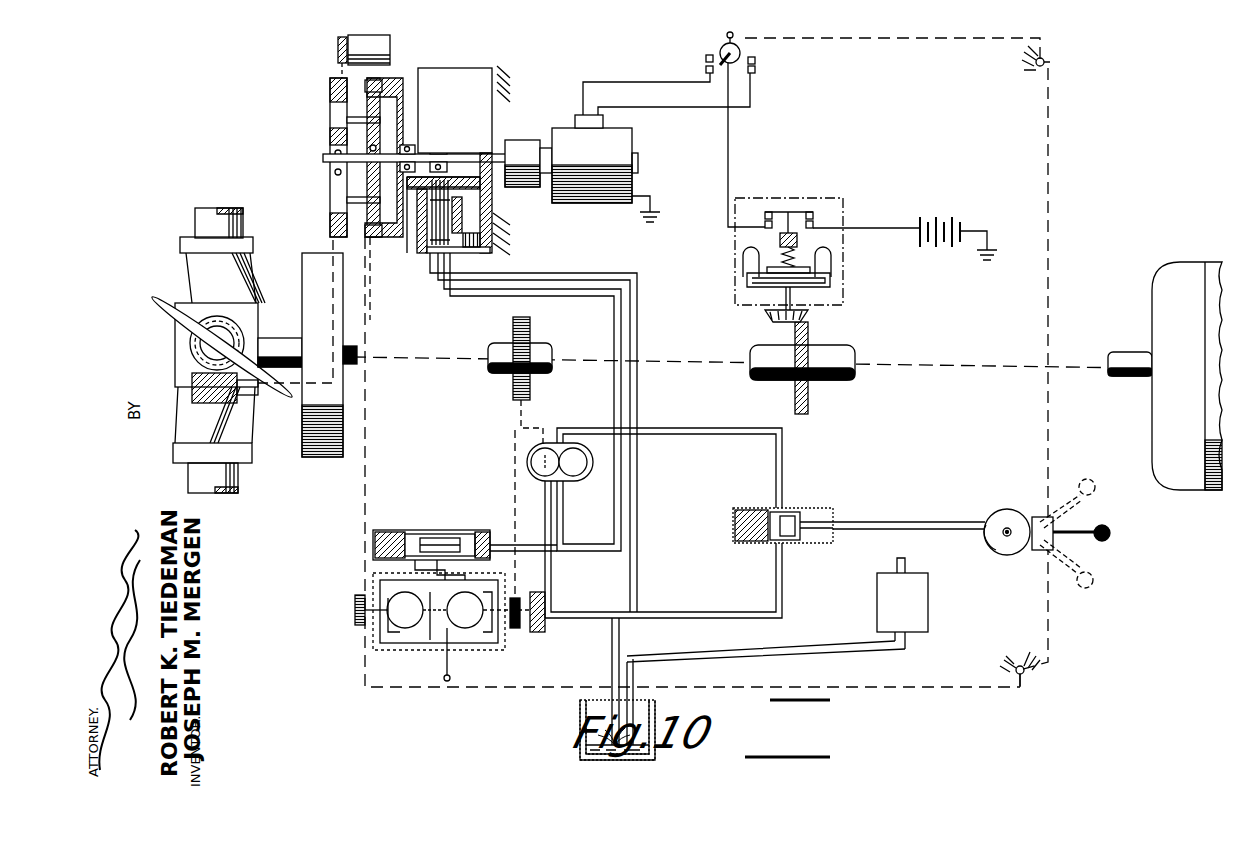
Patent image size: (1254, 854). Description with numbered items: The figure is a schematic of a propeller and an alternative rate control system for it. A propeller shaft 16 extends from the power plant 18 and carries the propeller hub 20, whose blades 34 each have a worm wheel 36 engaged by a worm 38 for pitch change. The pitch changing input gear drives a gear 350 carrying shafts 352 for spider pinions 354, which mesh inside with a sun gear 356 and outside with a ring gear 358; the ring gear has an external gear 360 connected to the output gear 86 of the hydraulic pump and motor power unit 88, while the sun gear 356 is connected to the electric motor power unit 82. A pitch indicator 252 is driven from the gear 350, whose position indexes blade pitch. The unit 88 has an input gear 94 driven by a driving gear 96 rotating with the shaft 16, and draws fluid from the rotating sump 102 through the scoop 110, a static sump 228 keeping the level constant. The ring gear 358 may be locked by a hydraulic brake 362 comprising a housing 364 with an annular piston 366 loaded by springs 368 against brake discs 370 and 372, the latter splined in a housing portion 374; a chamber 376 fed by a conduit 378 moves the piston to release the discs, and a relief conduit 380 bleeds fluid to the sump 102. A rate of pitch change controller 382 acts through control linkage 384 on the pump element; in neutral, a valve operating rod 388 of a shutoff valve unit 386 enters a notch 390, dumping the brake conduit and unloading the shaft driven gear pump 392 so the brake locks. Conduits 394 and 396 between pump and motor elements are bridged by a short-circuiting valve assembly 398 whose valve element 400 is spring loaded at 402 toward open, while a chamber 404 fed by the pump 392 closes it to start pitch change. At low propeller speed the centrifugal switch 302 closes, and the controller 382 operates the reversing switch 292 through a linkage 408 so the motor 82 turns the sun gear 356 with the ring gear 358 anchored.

The propeller shaft 16 is at (283, 337).
The power plant 18 is at (1176, 268).
The propeller hub 20 is at (185, 264).
The propeller blade 34 is at (243, 218).
The worm wheel 36 is at (190, 350).
The worm 38 is at (195, 398).
The electric motor power unit 82 is at (643, 140).
The output gear of hydraulic power unit 86 is at (355, 611).
The hydraulic pump and motor power unit 88 is at (371, 660).
The input gear 94 is at (516, 630).
The driving gear 96 is at (531, 389).
The rotating sump 102 is at (598, 762).
The scoop 110 is at (614, 642).
The static sump 228 is at (928, 602).
The pitch indicator 252 is at (356, 37).
The reversing switch 292 is at (745, 72).
The centrifugal switch 302 is at (843, 198).
The gear 350 is at (332, 92).
The shafts 352 is at (355, 116).
The spider pinions 354 is at (402, 88).
The sun gear 356 is at (370, 146).
The ring gear 358 is at (374, 80).
The external gear 360 is at (371, 268).
The hydraulic brake 362 is at (442, 270).
The brake housing 364 is at (492, 216).
The annular piston 366 is at (480, 230).
The springs 368 is at (478, 252).
The brake discs 370 is at (490, 152).
The brake discs 372 is at (450, 218).
The housing portion 374 is at (428, 240).
The annular cylindrical chamber 376 is at (437, 240).
The conduit 378 is at (612, 294).
The relief conduit 380 is at (634, 278).
The rate of pitch change controller 382 is at (1022, 512).
The control linkage 384 is at (1044, 627).
The shutoff valve unit 386 is at (830, 510).
The valve operating rod 388 is at (952, 526).
The notch 390 is at (990, 548).
The gear pump 392 is at (560, 482).
The connecting conduit 394 is at (446, 681).
The connecting conduit 396 is at (427, 642).
The short-circuiting valve assembly 398 is at (465, 538).
The valve element 400 is at (440, 526).
The spring 402 is at (392, 526).
The chamber 404 is at (484, 524).
The linkage 408 is at (1050, 164).